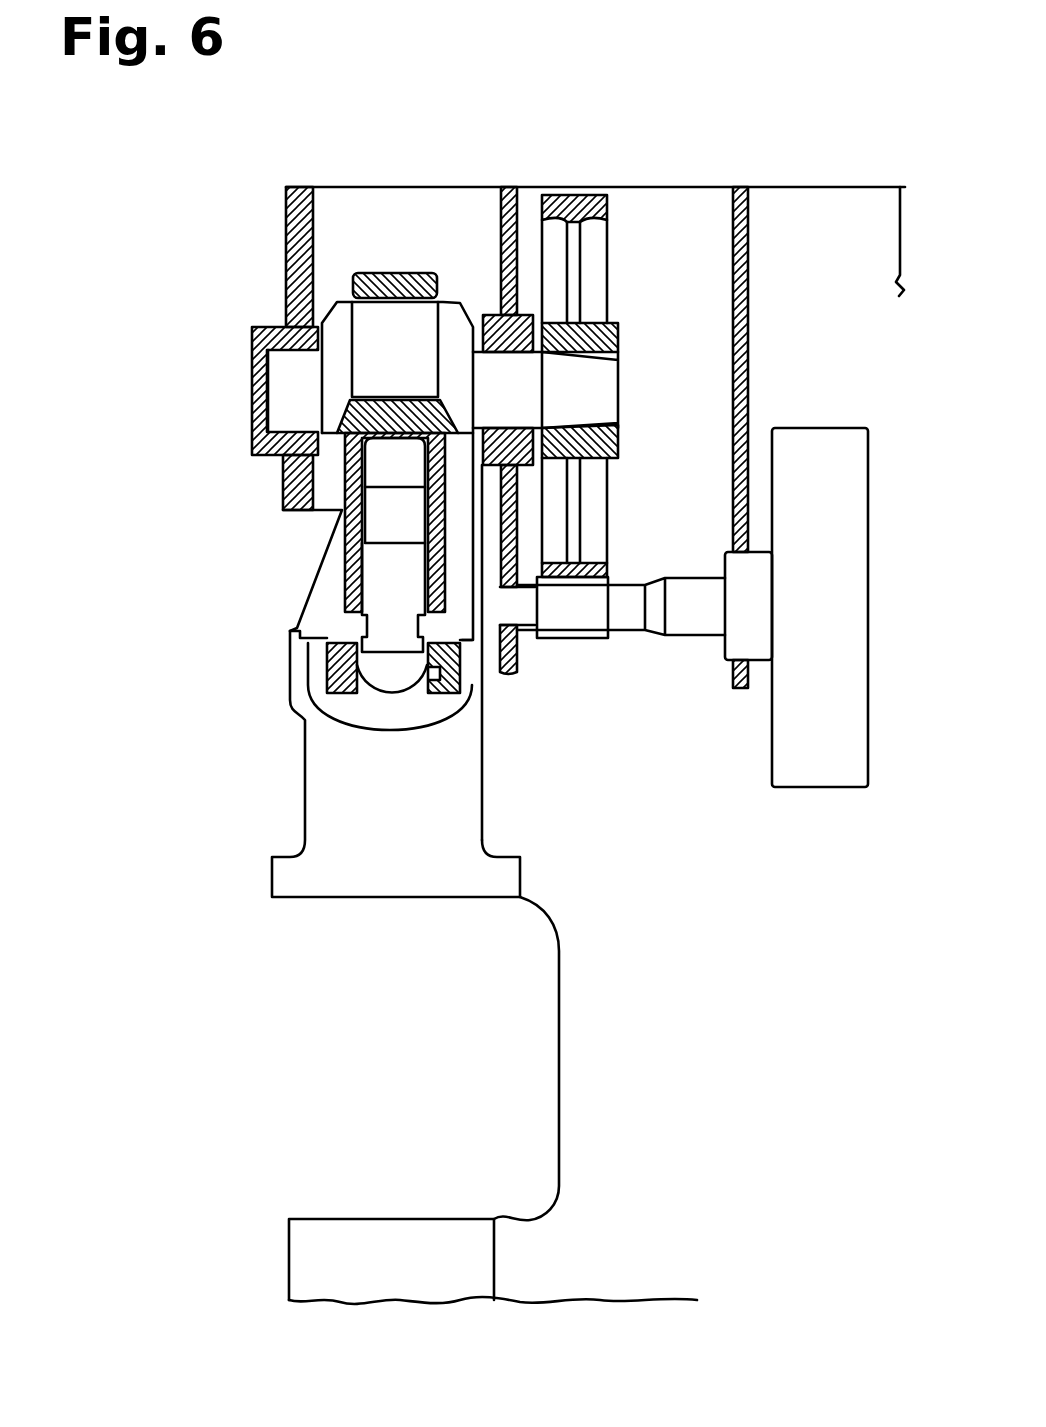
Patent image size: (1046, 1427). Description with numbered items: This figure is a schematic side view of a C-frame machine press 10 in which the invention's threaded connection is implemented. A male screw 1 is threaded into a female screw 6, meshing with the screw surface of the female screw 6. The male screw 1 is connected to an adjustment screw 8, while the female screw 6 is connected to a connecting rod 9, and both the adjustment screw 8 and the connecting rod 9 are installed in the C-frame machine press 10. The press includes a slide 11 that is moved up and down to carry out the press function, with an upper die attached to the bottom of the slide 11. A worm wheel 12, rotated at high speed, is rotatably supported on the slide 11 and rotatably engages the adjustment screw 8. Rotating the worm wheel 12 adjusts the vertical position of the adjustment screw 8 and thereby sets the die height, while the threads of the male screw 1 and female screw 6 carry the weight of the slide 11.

The C-frame machine press 10 is at (228, 283).
The connecting rod 9 is at (263, 442).
The male screw 1 is at (376, 467).
The female screw 6 is at (370, 515).
The adjustment screw 8 is at (377, 588).
The worm wheel 12 is at (323, 660).
The slide 11 is at (323, 805).